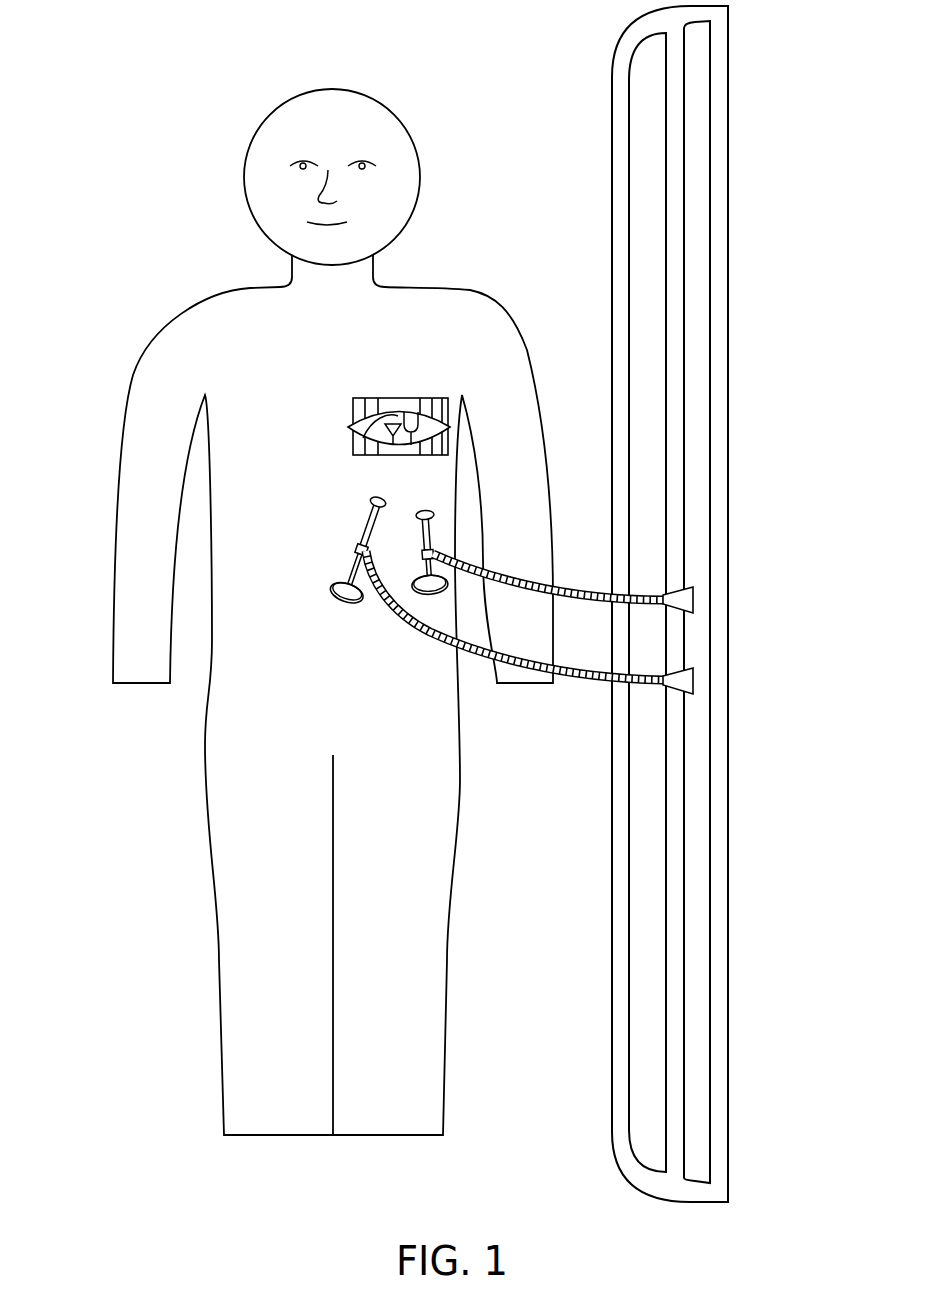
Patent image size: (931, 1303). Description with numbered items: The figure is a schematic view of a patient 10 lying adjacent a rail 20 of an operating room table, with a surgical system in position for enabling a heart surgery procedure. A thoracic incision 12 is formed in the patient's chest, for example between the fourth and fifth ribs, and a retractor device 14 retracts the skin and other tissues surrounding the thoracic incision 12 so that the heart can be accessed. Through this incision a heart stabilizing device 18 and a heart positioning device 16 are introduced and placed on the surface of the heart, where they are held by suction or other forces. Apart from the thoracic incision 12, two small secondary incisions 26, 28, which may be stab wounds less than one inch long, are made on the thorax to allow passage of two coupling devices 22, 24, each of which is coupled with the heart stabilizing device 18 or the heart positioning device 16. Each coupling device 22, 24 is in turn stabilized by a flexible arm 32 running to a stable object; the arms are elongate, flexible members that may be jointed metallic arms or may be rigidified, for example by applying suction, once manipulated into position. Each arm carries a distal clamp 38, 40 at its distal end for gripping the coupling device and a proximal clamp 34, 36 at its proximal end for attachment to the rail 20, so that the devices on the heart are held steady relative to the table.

The patient 10 is at (136, 305).
The thoracic incision 12 is at (349, 429).
The retractor device 14 is at (423, 413).
The heart positioning device 16 is at (362, 438).
The heart stabilizing device 18 is at (432, 412).
The rail 20 is at (733, 236).
The coupling device 22 is at (362, 527).
The coupling device 24 is at (434, 529).
The secondary incision 26 is at (370, 498).
The secondary incision 28 is at (434, 507).
The flexible arm 32 is at (578, 590).
The proximal clamp 34 is at (580, 686).
The proximal clamp 36 is at (697, 600).
The distal clamp 38 is at (350, 547).
The distal clamp 40 is at (434, 545).